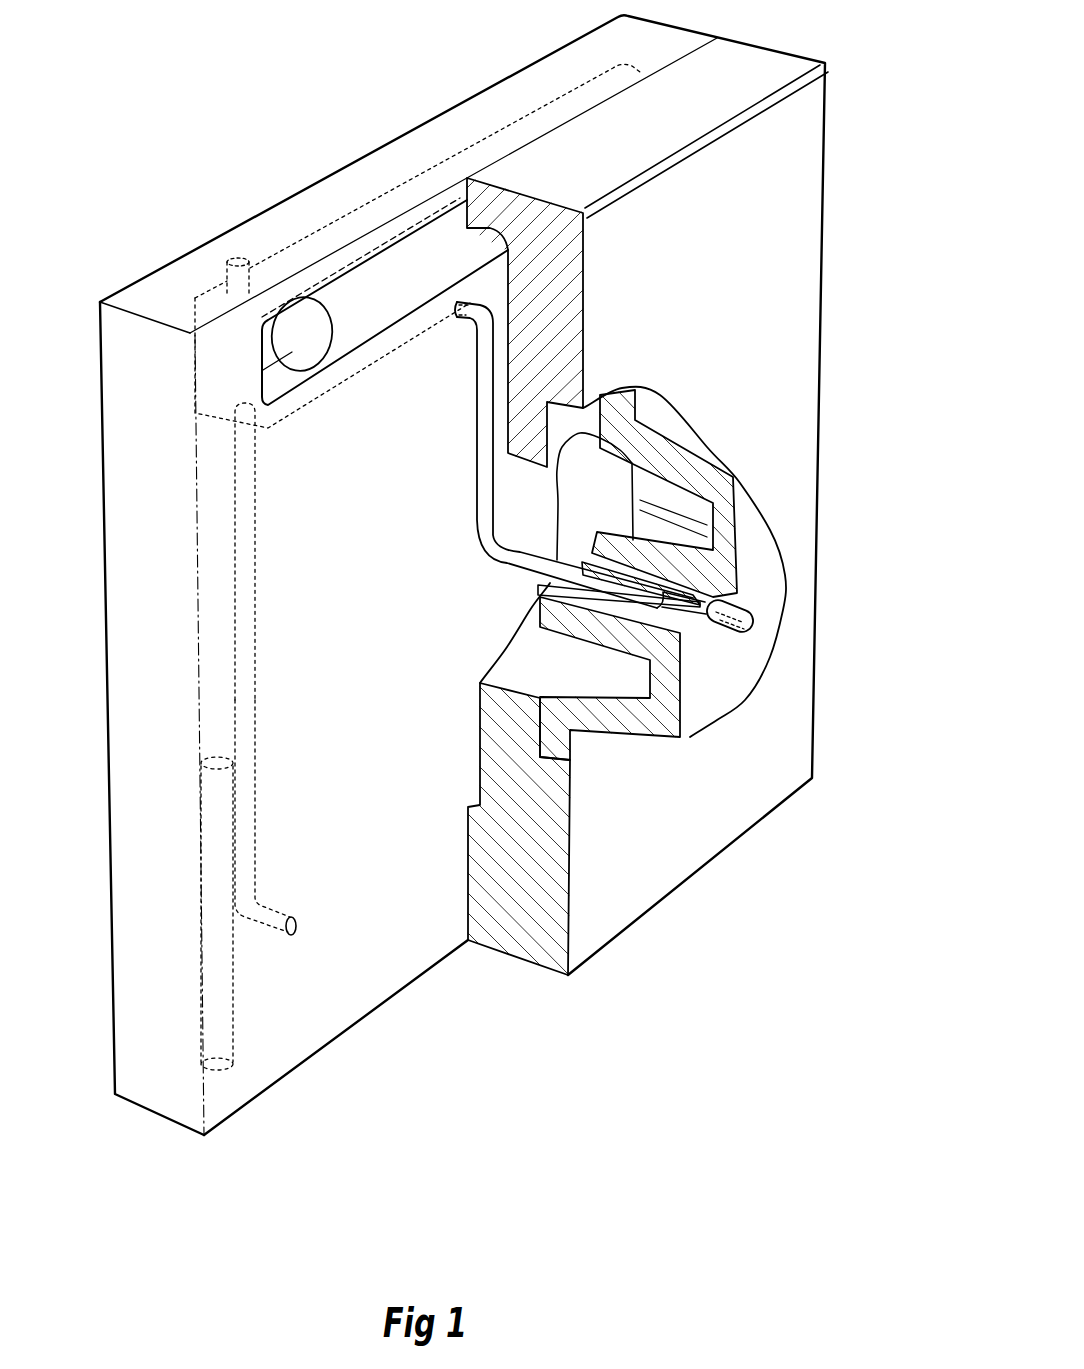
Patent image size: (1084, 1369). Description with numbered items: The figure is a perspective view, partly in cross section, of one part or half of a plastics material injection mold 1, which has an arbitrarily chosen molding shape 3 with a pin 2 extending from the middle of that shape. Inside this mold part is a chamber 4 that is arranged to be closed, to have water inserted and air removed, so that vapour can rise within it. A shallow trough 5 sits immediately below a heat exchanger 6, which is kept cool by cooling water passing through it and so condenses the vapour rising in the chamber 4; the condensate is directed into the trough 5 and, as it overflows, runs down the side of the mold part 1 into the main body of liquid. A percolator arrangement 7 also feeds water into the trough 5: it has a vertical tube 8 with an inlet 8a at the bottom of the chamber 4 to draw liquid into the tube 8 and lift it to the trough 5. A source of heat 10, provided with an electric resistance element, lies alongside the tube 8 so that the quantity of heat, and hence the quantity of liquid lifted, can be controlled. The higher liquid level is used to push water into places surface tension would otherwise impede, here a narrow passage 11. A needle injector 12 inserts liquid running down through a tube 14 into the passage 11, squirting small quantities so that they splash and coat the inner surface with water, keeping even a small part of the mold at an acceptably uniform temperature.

The plastics material injection mold 1 is at (773, 168).
The pin 2 is at (752, 607).
The molding shape 3 is at (767, 532).
The chamber 4 is at (397, 947).
The shallow trough 5 is at (303, 380).
The heat exchanger 6 is at (360, 310).
The percolator arrangement 7 is at (251, 705).
The vertical tube 8 is at (252, 785).
The inlet 8a is at (297, 924).
The source of heat 10 is at (220, 962).
The narrow passage 11 is at (717, 720).
The needle injector 12 is at (735, 585).
The tube 14 is at (477, 522).